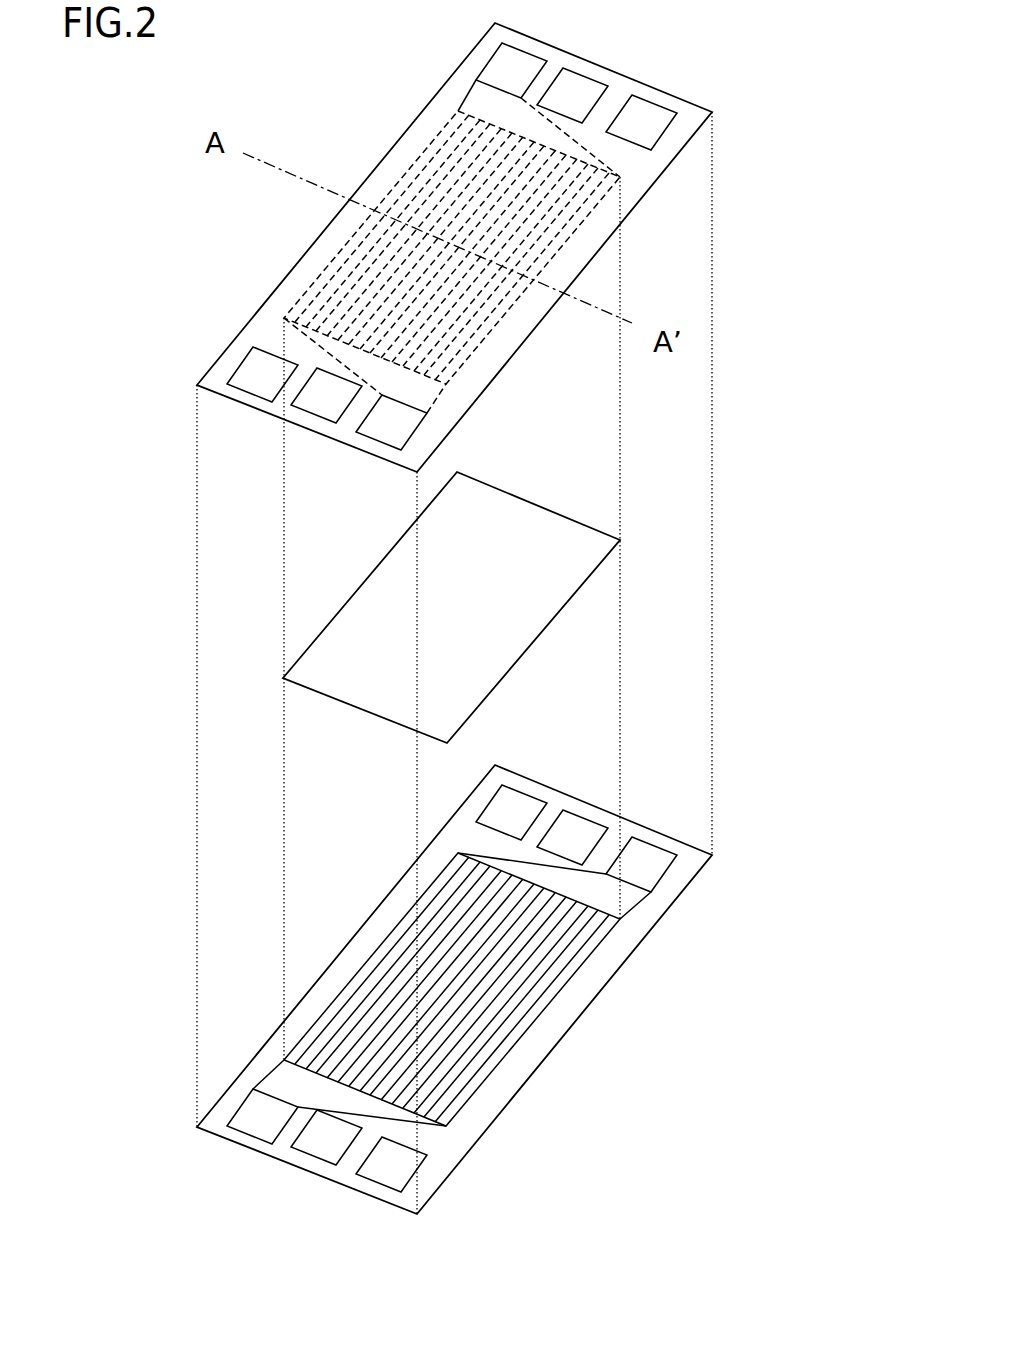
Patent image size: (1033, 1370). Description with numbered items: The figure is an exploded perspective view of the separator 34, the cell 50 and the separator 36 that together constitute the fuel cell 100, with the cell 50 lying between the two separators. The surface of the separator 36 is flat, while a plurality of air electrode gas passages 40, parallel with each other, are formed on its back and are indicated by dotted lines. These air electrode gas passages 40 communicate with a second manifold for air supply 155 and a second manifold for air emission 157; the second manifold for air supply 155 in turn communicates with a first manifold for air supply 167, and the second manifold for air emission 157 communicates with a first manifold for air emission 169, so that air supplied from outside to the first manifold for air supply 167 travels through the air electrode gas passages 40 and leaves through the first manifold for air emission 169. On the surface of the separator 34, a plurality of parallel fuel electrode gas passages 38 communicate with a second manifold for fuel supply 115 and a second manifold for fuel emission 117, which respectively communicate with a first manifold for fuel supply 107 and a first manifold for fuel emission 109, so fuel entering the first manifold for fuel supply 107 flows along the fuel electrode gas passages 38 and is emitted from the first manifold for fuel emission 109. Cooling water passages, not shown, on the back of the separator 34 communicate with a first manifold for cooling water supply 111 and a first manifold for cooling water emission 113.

The fuel cell 100 is at (763, 1328).
The separator 36 is at (689, 180).
The separator 34 is at (529, 1120).
The cell 50 is at (584, 629).
The air electrode gas passages 40 is at (553, 229).
The fuel electrode gas passages 38 is at (543, 970).
The second manifold for air supply 155 is at (474, 102).
The second manifold for air emission 157 is at (431, 396).
The second manifold for fuel supply 115 is at (617, 907).
The second manifold for fuel emission 117 is at (282, 1077).
The first manifold for air supply 167 is at (508, 62).
The first manifold for cooling water supply 111 is at (572, 87).
The first manifold for fuel supply 107 is at (642, 110).
The first manifold for fuel emission 109 is at (260, 381).
The first manifold for cooling water emission 113 is at (330, 405).
The first manifold for air emission 169 is at (398, 427).